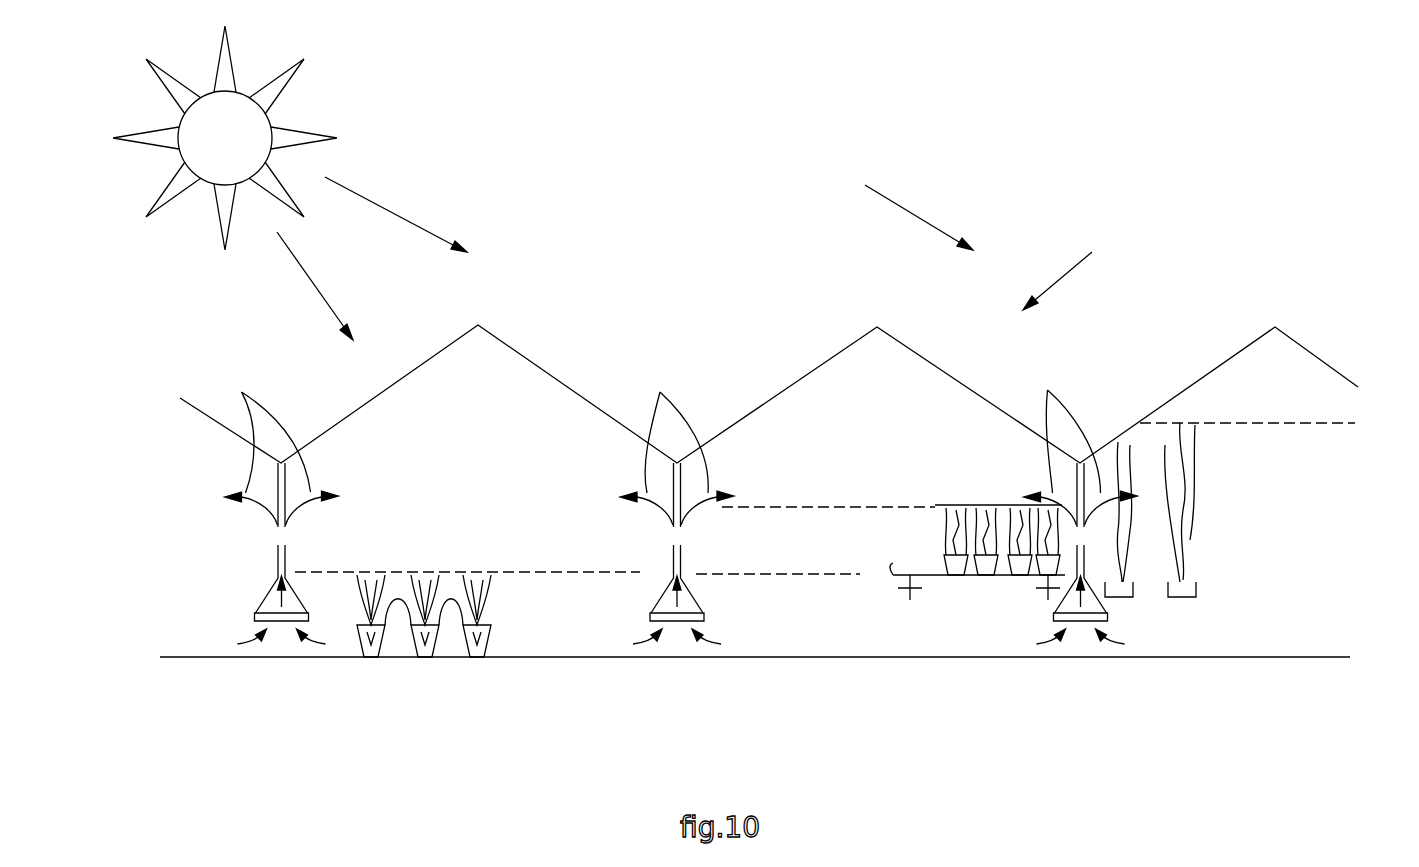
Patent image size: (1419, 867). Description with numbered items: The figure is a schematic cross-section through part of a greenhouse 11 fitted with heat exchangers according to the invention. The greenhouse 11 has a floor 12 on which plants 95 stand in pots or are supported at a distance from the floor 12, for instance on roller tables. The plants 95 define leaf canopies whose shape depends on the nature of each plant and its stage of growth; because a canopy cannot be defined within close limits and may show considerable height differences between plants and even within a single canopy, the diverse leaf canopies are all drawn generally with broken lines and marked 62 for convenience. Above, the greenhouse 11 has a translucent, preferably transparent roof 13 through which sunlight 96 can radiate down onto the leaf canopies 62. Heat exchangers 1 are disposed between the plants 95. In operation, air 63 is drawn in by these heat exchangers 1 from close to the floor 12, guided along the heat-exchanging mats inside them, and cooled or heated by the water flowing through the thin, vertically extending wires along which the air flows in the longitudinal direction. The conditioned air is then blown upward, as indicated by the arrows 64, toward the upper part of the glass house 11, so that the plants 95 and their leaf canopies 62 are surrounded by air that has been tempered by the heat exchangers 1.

The heat exchanger 1 is at (274, 630).
The greenhouse 11 is at (1064, 269).
The floor 12 is at (505, 660).
The roof 13 is at (338, 423).
The leaf canopy 62 is at (490, 570).
The air 63 is at (238, 644).
The arrows 64 is at (242, 392).
The plants 95 is at (477, 660).
The sunlight 96 is at (318, 281).